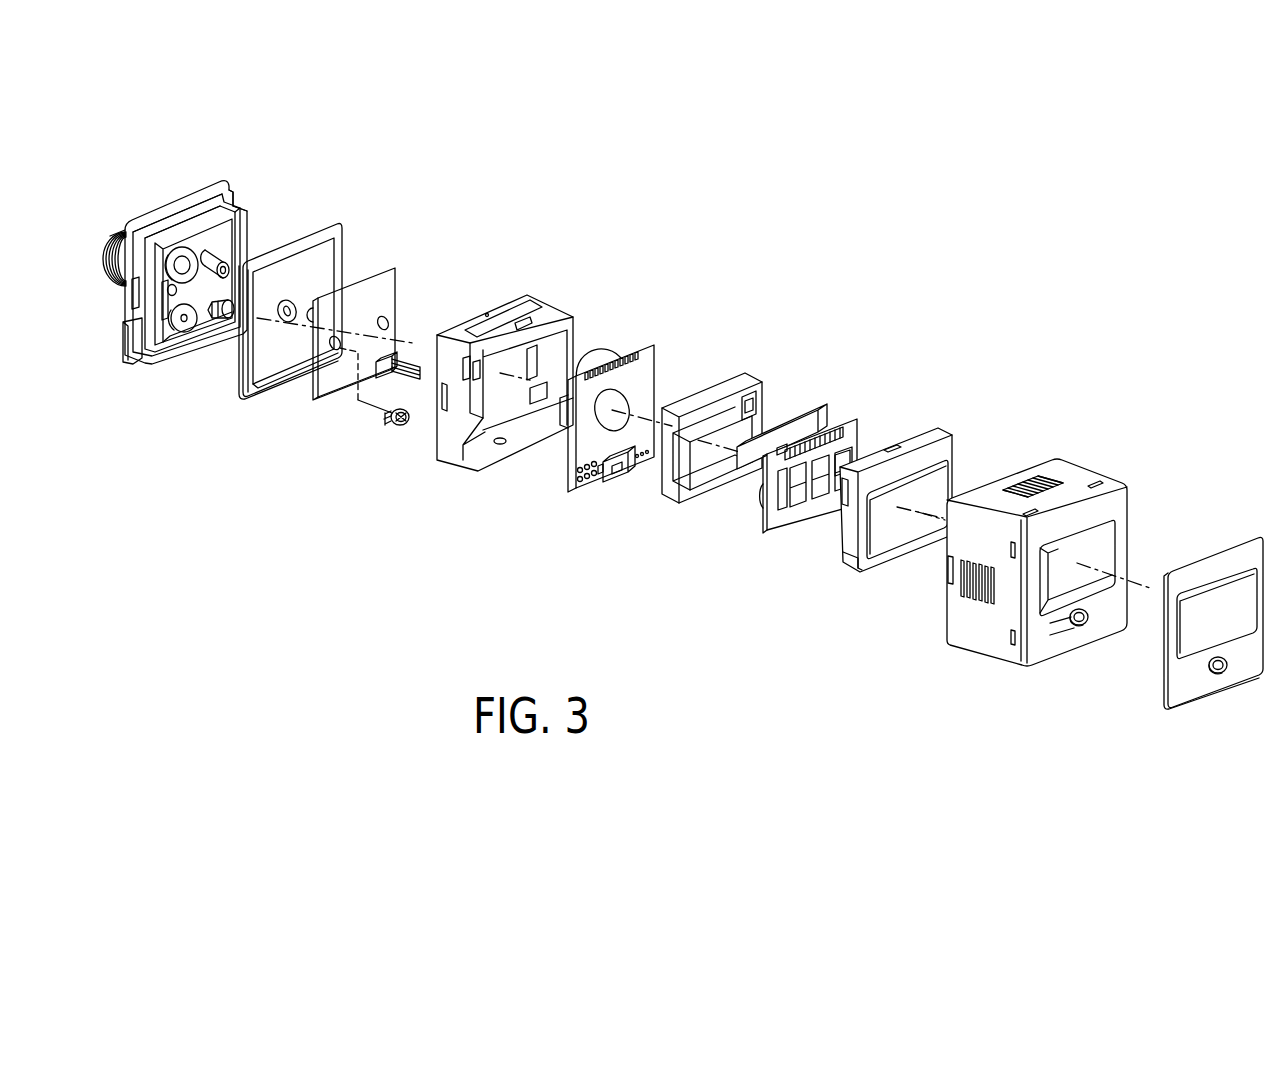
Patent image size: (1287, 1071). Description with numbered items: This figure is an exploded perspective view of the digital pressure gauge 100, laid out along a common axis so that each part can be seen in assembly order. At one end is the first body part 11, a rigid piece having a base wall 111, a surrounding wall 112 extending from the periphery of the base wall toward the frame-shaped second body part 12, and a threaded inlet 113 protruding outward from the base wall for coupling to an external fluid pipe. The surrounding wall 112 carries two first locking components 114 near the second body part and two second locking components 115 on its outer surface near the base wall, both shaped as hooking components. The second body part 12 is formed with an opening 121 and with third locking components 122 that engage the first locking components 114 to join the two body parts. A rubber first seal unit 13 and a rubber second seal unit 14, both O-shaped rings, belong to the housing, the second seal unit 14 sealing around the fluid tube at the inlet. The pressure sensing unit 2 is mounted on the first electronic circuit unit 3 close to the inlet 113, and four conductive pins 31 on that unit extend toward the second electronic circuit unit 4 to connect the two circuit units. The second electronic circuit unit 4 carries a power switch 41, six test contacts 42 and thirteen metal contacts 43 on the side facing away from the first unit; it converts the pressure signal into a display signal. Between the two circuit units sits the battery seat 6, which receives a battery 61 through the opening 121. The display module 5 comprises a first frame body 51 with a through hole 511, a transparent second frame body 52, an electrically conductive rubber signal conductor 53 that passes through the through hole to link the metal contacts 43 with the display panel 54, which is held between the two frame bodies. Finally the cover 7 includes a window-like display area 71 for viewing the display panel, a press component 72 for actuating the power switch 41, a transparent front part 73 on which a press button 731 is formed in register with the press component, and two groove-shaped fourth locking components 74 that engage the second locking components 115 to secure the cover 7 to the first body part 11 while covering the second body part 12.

The digital pressure gauge 100 is at (1049, 266).
The first body part 11 is at (150, 175).
The base wall 111 is at (193, 236).
The surrounding wall 112 is at (153, 336).
The inlet 113 is at (105, 250).
The first locking components 114 is at (240, 256).
The second locking components 115 is at (133, 296).
The second body part 12 is at (550, 281).
The opening 121 is at (507, 314).
The third locking components 122 is at (532, 348).
The first seal unit 13 is at (320, 233).
The second seal unit 14 is at (285, 300).
The pressure sensing unit 2 is at (311, 311).
The first electronic circuit unit 3 is at (400, 256).
The conductive pins 31 is at (418, 357).
The second electronic circuit unit 4 is at (693, 344).
The power switch 41 is at (633, 464).
The test contacts 42 is at (583, 484).
The metal contacts 43 is at (633, 358).
The display module 5 is at (874, 408).
The first frame body 51 is at (738, 382).
The through hole 511 is at (752, 408).
The second frame body 52 is at (893, 539).
The signal conductor 53 is at (815, 414).
The display panel 54 is at (803, 529).
The battery seat 6 is at (563, 423).
The battery 61 is at (602, 353).
The cover 7 is at (1178, 463).
The display area 71 is at (1090, 586).
The press component 72 is at (1080, 628).
The front part 73 is at (1212, 700).
The press button 731 is at (1224, 671).
The fourth locking components 74 is at (951, 578).